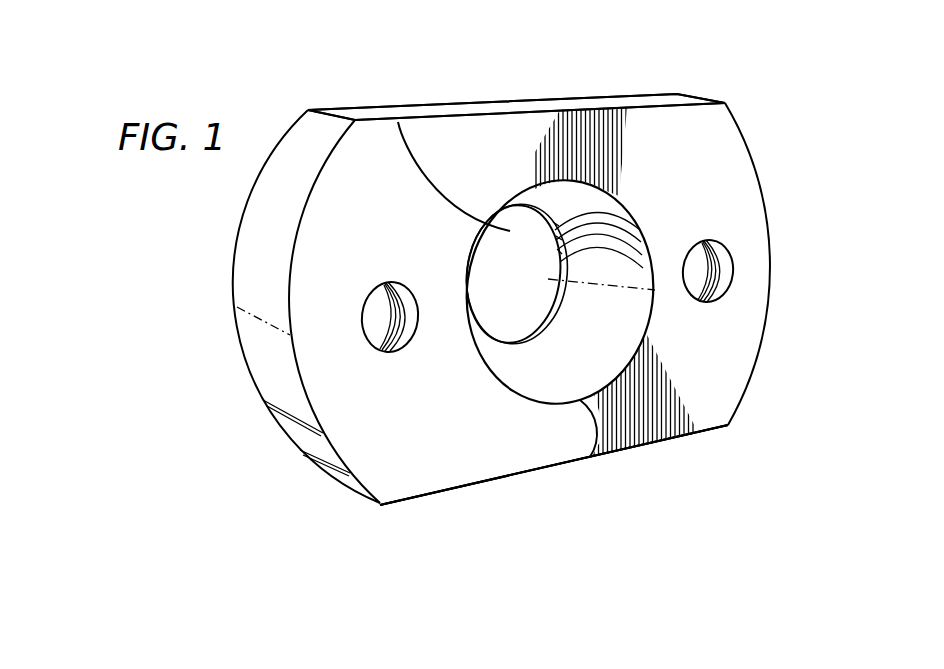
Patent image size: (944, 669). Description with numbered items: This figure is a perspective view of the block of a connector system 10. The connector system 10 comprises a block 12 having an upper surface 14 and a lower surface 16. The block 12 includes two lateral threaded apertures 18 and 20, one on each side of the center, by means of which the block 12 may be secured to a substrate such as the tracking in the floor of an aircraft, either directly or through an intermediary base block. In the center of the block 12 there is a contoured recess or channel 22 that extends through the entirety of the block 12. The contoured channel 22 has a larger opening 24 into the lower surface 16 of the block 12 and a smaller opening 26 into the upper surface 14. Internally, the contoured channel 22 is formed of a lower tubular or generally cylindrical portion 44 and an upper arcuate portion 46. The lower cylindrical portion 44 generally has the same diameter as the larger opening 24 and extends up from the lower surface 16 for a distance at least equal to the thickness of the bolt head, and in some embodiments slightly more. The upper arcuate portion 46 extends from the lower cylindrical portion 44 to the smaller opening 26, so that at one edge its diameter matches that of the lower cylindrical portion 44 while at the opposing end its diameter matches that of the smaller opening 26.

The connector system 10 is at (117, 258).
The block 12 is at (417, 492).
The upper surface 14 is at (653, 90).
The lower surface 16 is at (486, 467).
The lateral threaded aperture 18 is at (373, 332).
The lateral threaded aperture 20 is at (722, 272).
The contoured channel 22 is at (601, 372).
The larger opening 24 is at (590, 457).
The smaller opening 26 is at (398, 122).
The lower cylindrical portion 44 is at (638, 312).
The upper arcuate portion 46 is at (566, 192).